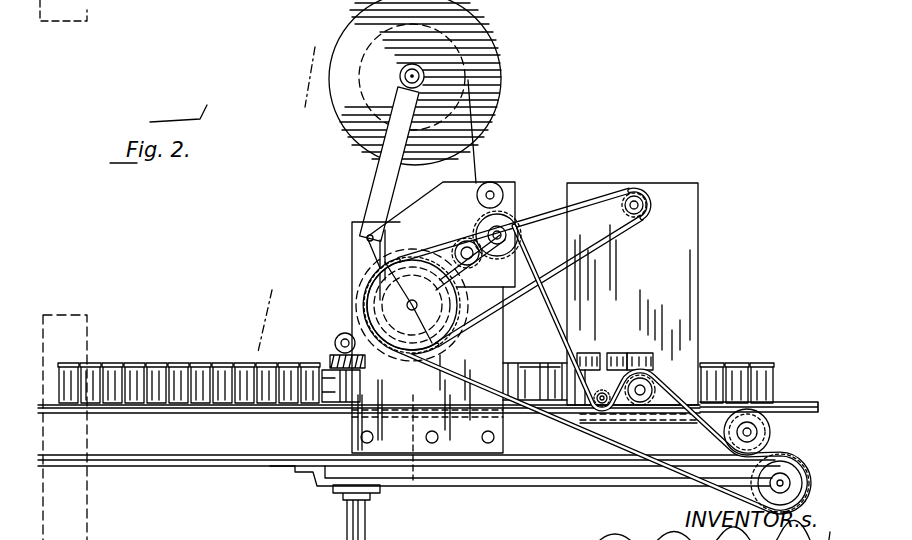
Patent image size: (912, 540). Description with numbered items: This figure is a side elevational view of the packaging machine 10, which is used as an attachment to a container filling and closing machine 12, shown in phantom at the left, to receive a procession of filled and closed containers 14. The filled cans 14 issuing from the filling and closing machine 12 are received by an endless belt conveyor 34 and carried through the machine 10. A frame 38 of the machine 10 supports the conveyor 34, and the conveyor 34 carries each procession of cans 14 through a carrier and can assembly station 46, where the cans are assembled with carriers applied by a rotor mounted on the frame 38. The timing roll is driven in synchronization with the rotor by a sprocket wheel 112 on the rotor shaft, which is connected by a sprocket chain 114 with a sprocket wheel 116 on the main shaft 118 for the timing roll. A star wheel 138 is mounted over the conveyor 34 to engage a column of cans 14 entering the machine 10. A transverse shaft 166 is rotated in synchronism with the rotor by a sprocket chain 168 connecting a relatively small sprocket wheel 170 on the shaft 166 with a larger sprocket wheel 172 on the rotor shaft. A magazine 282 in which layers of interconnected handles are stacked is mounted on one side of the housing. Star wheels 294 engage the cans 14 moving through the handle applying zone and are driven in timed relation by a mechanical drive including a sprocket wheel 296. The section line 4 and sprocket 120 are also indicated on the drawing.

The section line 4- 4 is at (320, 83).
The machine 10 is at (326, 242).
The container filling and closing machine 12 is at (92, 311).
The containers 14 is at (114, 376).
The endless belt conveyor 34 is at (145, 412).
The frame 38 is at (362, 260).
The carrier and can assembly station 46 is at (374, 467).
The sprocket wheel 112 is at (437, 297).
The sprocket chain 114 is at (557, 313).
The sprocket wheel 116 is at (470, 236).
The main shaft 118 is at (518, 254).
The sprocket 120 is at (768, 487).
The star wheel 138 is at (332, 360).
The transverse shaft 166 is at (650, 209).
The sprocket chain 168 is at (541, 214).
The small sprocket wheel 170 is at (638, 192).
The large sprocket wheel 172 is at (457, 314).
The magazine 282 is at (680, 254).
The star wheels 294 is at (597, 352).
The sprocket wheel 296 is at (657, 384).